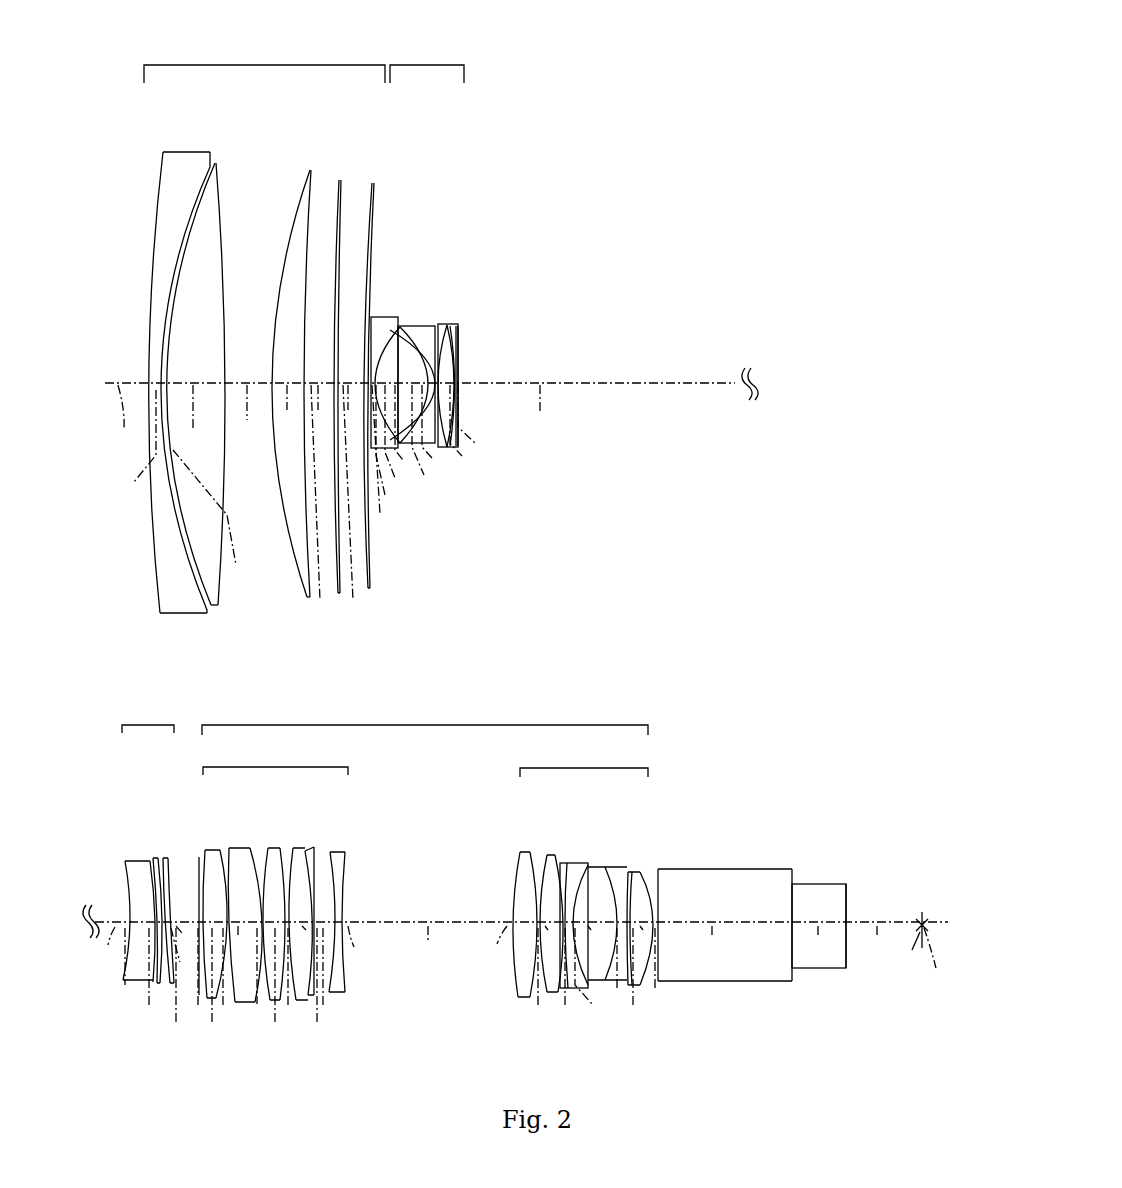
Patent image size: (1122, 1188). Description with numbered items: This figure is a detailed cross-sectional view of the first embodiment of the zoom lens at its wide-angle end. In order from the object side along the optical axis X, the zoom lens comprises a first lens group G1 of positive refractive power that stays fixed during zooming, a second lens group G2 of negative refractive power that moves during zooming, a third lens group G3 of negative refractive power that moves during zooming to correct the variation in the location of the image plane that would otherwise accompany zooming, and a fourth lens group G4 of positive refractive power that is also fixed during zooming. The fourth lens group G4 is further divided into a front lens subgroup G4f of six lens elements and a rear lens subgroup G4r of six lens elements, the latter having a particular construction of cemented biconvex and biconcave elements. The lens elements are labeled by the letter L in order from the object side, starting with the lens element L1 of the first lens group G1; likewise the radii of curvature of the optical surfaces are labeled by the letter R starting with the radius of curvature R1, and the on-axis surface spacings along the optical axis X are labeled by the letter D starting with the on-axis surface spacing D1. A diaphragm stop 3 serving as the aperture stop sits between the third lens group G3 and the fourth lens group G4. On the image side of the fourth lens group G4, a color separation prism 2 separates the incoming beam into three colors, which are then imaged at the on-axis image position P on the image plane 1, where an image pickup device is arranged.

The image plane 1 is at (922, 910).
The color separation prism 2 is at (826, 884).
The diaphragm stop 3 is at (197, 858).
The first lens group G1 is at (264, 56).
The second lens group G2 is at (427, 56).
The third lens group G3 is at (148, 713).
The fourth lens group G4 is at (425, 715).
The front lens subgroup G4f is at (275, 756).
The rear lens subgroup G4r is at (584, 757).
The optical axis X is at (527, 688).
The image position P is at (910, 950).
The lens element L1 is at (167, 360).
The radius of curvature R1 is at (161, 190).
The on-axis surface spacing D1 is at (137, 446).